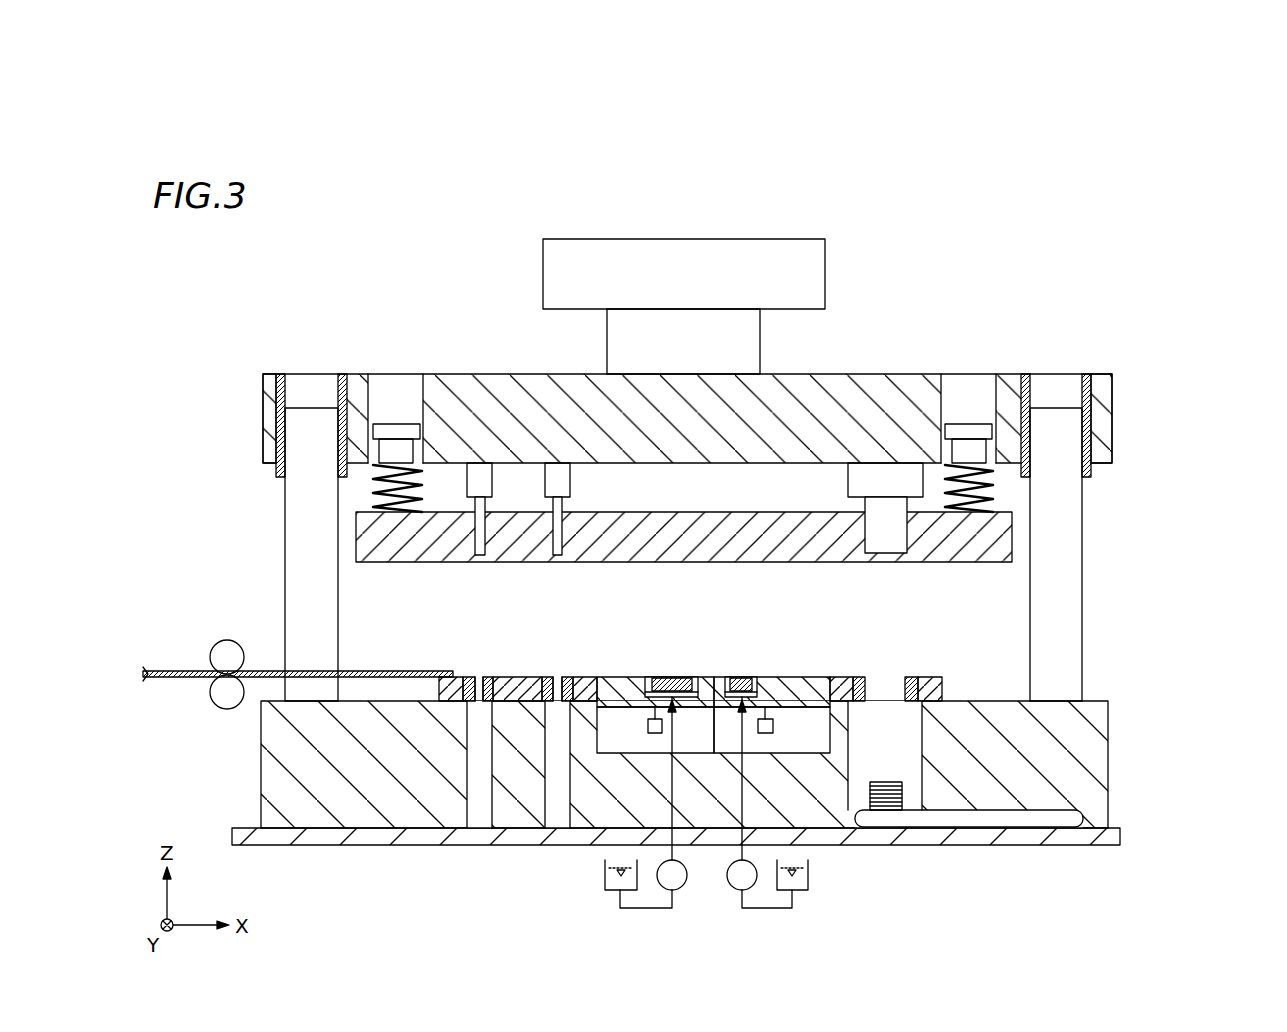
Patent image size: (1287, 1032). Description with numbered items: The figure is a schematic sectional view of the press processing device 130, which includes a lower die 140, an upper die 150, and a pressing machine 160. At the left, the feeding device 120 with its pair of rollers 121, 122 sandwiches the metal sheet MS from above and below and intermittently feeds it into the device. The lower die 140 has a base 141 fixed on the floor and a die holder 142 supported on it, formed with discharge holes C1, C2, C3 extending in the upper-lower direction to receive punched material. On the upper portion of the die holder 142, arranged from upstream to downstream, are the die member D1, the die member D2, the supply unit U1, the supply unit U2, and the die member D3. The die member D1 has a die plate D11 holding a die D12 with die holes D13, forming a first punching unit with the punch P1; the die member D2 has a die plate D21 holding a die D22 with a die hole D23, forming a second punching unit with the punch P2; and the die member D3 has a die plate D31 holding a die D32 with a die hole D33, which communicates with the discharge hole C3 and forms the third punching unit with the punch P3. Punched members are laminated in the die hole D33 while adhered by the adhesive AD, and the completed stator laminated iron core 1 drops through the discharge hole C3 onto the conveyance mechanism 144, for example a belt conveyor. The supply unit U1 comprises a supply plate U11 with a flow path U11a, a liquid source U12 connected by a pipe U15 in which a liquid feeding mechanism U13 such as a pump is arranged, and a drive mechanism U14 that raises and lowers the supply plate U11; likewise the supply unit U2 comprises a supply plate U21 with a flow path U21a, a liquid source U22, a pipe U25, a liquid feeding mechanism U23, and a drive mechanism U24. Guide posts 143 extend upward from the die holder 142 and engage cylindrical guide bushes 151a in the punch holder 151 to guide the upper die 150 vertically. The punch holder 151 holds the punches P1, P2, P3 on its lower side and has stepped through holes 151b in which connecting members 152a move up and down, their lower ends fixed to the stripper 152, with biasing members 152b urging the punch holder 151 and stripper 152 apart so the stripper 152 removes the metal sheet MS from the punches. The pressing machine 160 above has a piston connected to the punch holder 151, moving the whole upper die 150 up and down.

The press processing device 130 is at (1058, 235).
The pressing machine 160 is at (826, 272).
The upper die 150 is at (1155, 382).
The punch holder 151 is at (907, 380).
The guide bush 151a is at (281, 384).
The through hole 151b is at (378, 392).
The stripper 152 is at (1000, 550).
The connecting member 152a is at (400, 430).
The biasing member 152b is at (372, 500).
The guide post 143 is at (293, 537).
The punch P1 is at (492, 482).
The punch P2 is at (571, 482).
The punch P3 is at (848, 484).
The feeding device 120 is at (180, 592).
The roller 121 is at (226, 640).
The roller 122 is at (227, 709).
The metal sheet MS is at (183, 671).
The lower die 140 is at (1152, 706).
The base 141 is at (1117, 838).
The die holder 142 is at (1105, 757).
The conveyance mechanism 144 is at (1033, 830).
The stator laminated iron core 1 is at (882, 762).
The discharge hole C1 is at (487, 797).
The discharge hole C2 is at (565, 797).
The discharge hole C3 is at (918, 797).
The die member D1 is at (466, 748).
The die member D2 is at (551, 748).
The die member D3 is at (899, 755).
The die plate D11 is at (452, 677).
The die D12 is at (488, 677).
The die hole D13 is at (457, 709).
The die plate D21 is at (530, 677).
The die D22 is at (585, 660).
The die hole D23 is at (534, 709).
The die plate D31 is at (838, 677).
The die D32 is at (938, 708).
The die hole D33 is at (866, 688).
The supply unit U1 is at (664, 623).
The supply unit U2 is at (761, 623).
The supply plate U11 is at (617, 676).
The flow path U11a is at (662, 677).
The liquid source U12 is at (605, 875).
The liquid feeding mechanism U13 is at (686, 888).
The drive mechanism U14 is at (653, 732).
The pipe U15 is at (636, 910).
The supply plate U21 is at (812, 677).
The flow path U21a is at (741, 677).
The liquid source U22 is at (810, 875).
The liquid feeding mechanism U23 is at (729, 888).
The drive mechanism U24 is at (770, 733).
The pipe U25 is at (780, 910).
The adhesive AD is at (616, 891).